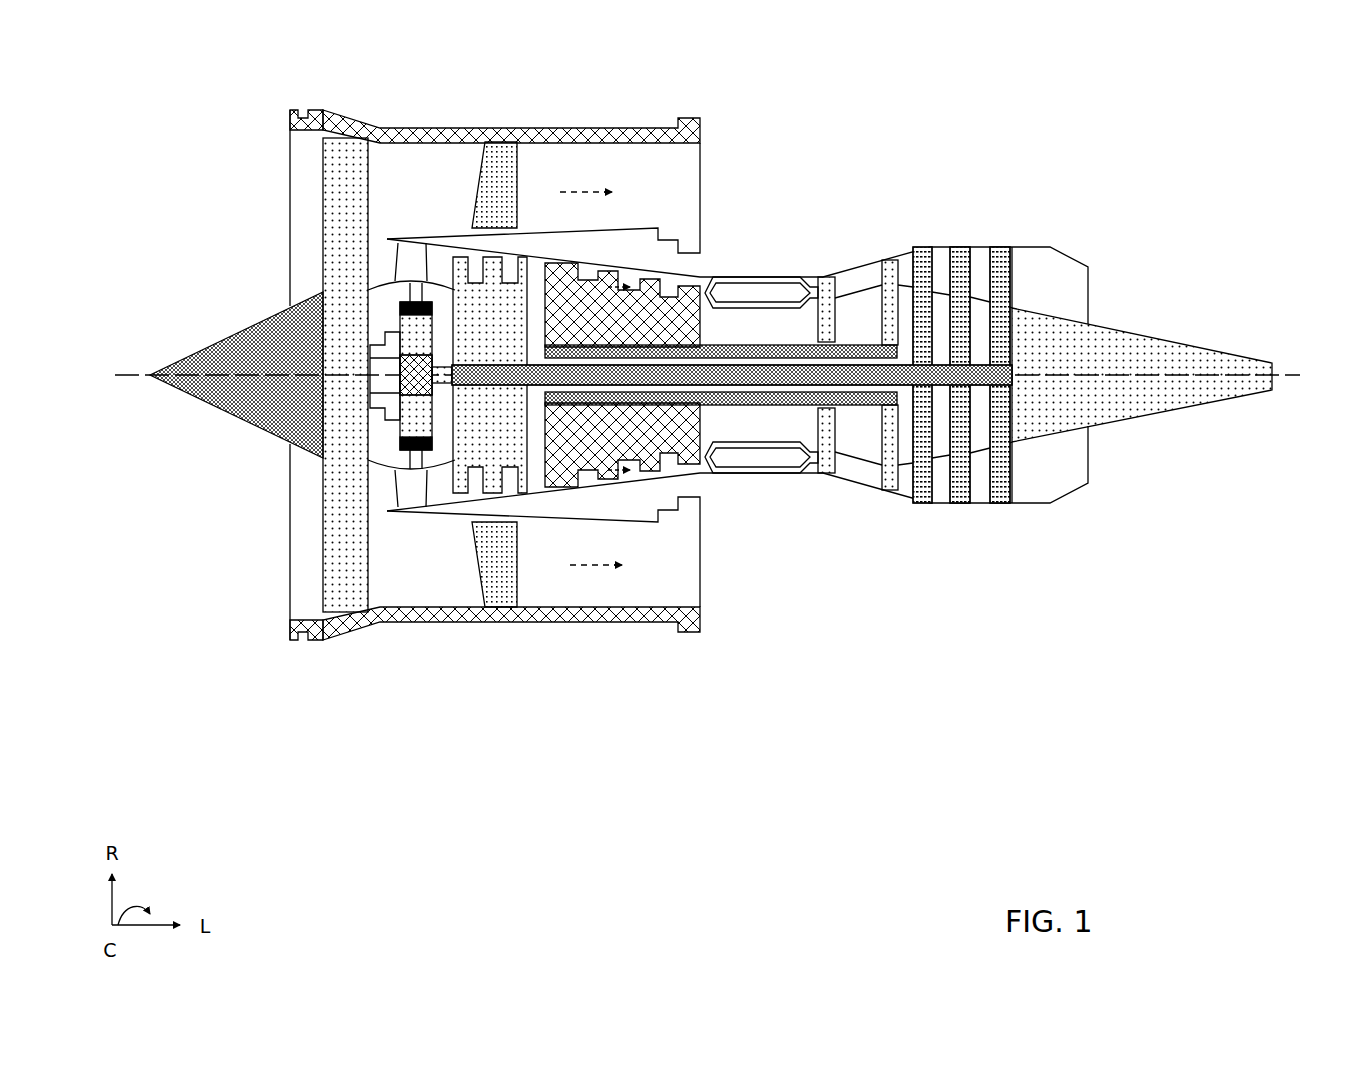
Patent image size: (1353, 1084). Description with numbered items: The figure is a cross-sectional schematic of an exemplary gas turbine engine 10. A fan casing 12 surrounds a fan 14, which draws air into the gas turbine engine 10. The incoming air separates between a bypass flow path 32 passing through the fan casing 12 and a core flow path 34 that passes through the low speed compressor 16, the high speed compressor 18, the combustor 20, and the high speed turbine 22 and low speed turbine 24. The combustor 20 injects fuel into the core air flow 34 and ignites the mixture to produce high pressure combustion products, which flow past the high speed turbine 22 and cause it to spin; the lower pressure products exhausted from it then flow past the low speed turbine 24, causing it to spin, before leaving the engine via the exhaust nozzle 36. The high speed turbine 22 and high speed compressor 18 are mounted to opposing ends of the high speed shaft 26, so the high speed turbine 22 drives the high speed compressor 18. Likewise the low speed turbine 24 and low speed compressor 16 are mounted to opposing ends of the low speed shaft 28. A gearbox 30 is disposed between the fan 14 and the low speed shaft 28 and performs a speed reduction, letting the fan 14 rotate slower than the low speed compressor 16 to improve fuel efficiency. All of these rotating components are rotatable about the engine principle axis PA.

The gas turbine engine 10 is at (1126, 168).
The fan casing 12 is at (343, 118).
The fan 14 is at (323, 242).
The low speed compressor 16 is at (528, 477).
The high speed compressor 18 is at (690, 277).
The combustor 20 is at (765, 463).
The high speed turbine 22 is at (826, 277).
The low speed turbine 24 is at (995, 507).
The high speed shaft 26 is at (757, 345).
The low speed shaft 28 is at (822, 390).
The gearbox 30 is at (385, 436).
The bypass flow path 32 is at (583, 190).
The core flow path 34 is at (590, 283).
The exhaust nozzle 36 is at (1090, 450).
The engine principle axis PA is at (132, 375).